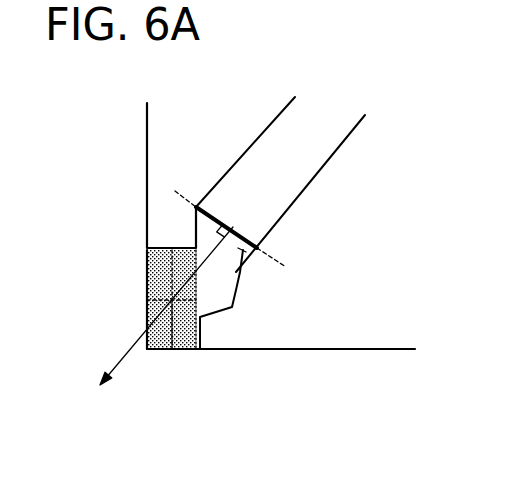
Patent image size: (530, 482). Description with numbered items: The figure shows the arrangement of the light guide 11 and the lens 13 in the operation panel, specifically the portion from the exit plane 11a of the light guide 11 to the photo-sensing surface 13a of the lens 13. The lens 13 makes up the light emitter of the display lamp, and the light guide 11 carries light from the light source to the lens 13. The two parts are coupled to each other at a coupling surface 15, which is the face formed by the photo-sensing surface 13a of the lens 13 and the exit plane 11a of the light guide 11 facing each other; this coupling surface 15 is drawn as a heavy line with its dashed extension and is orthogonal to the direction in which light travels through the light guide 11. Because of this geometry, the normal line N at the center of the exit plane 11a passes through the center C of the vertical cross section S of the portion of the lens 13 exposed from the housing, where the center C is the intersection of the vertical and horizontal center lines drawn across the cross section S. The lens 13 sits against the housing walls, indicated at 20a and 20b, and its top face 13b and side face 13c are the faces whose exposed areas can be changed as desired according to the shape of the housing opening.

The light guide 11 is at (249, 182).
The exit plane 11a is at (247, 232).
The lens 13 is at (216, 300).
The photo-sensing surface 13a is at (242, 248).
The top face 13b is at (190, 352).
The side face 13c is at (146, 296).
The coupling surface 15 is at (288, 267).
The bottom wall of housing 20a is at (342, 350).
The side wall of housing 20b is at (146, 131).
The center C is at (165, 292).
The normal line N is at (133, 341).
The vertical cross section S is at (163, 340).